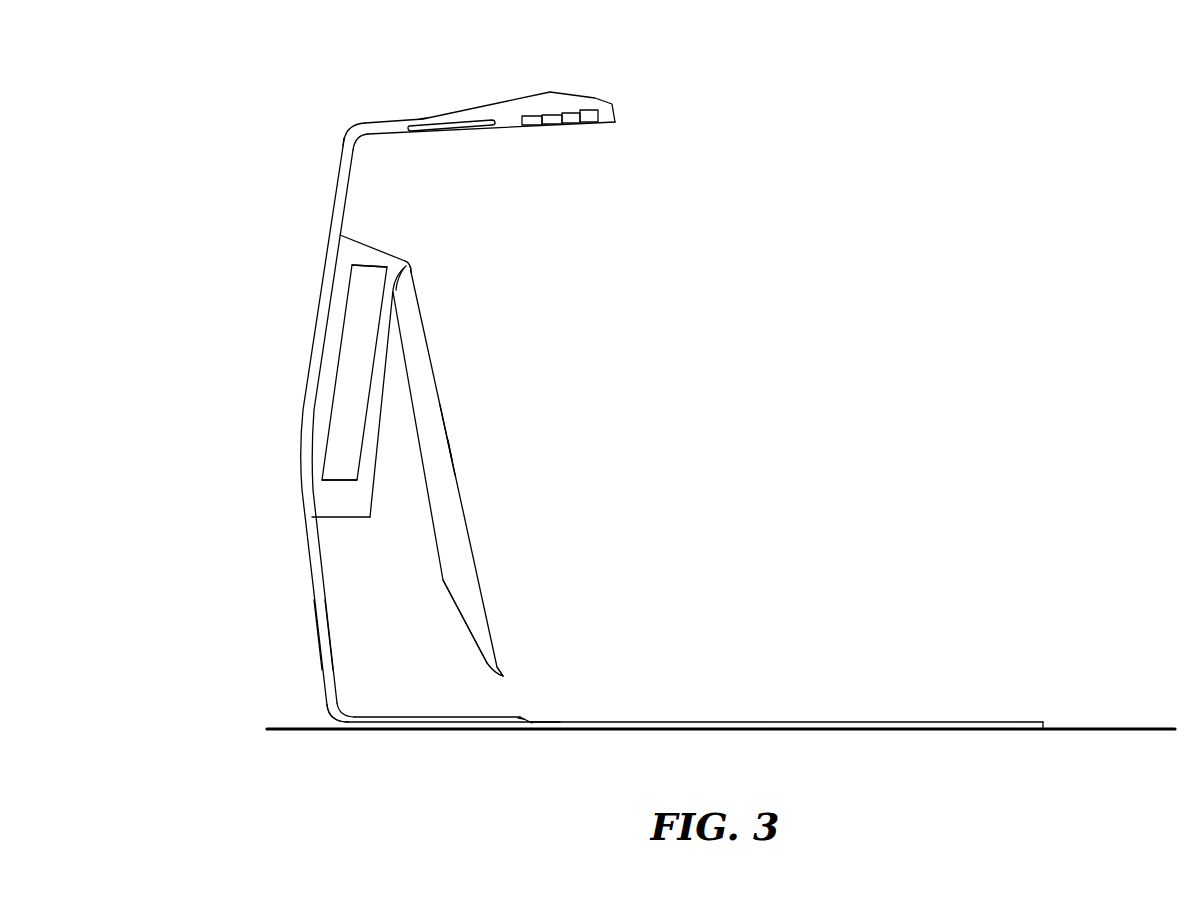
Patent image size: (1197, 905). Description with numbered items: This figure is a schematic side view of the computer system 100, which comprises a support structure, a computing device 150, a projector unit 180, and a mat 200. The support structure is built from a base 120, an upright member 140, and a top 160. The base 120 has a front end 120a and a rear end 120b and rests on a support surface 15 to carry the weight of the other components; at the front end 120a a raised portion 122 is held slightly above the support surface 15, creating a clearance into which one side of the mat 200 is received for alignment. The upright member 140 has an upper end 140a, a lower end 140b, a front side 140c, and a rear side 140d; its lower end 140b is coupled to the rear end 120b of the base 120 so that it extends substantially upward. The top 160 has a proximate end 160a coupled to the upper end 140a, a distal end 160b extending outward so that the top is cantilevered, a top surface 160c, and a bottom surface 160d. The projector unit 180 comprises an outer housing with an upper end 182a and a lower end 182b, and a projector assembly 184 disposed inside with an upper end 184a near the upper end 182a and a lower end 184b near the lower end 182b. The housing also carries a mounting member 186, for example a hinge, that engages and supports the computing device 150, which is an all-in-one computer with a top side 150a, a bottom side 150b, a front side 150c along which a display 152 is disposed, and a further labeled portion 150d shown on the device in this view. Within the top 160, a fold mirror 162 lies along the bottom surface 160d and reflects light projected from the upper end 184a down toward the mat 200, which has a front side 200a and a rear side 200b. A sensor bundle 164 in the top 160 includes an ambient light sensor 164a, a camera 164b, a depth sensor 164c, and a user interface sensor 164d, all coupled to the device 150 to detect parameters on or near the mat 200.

The computer system 100 is at (858, 217).
The support surface 15 is at (1102, 727).
The base 120 is at (472, 719).
The front end 120a is at (551, 715).
The rear end 120b is at (342, 742).
The raised portion 122 is at (532, 712).
The upright member 140 is at (312, 414).
The upper end 140a is at (334, 136).
The lower end 140b is at (318, 716).
The front side 140c is at (325, 612).
The rear side 140d is at (308, 603).
The computing device 150 is at (500, 459).
The top side 150a is at (412, 268).
The bottom side 150b is at (505, 672).
The front side 150c is at (448, 440).
The display 152 is at (450, 450).
The arm lower portion 150d is at (445, 582).
The top 160 is at (502, 122).
The proximate end 160a is at (352, 120).
The distal end 160b is at (630, 103).
The top surface 160c is at (418, 112).
The bottom surface 160d is at (394, 152).
The fold mirror 162 is at (447, 136).
The sensor bundle 164 is at (565, 100).
The ambient light sensor 164a is at (594, 110).
The camera 164b is at (569, 113).
The depth sensor 164c is at (547, 114).
The user interface sensor 164d is at (530, 115).
The projector unit 180 is at (385, 388).
The upper end 182a is at (340, 225).
The lower end 182b is at (355, 545).
The projector assembly 184 is at (336, 385).
The upper end 184a is at (341, 256).
The lower end 184b is at (371, 508).
The mounting member 186 is at (409, 296).
The mat 200 is at (790, 733).
The front side 200a is at (1058, 739).
The rear side 200b is at (496, 738).